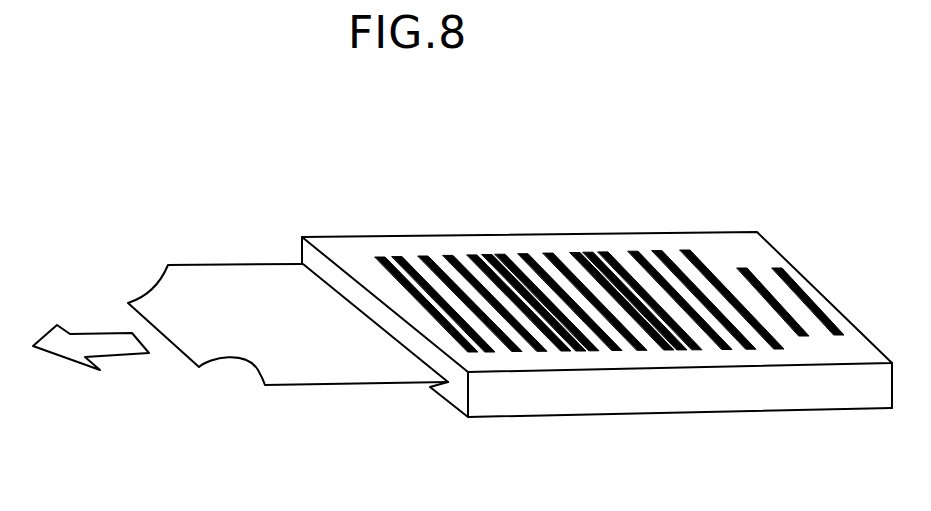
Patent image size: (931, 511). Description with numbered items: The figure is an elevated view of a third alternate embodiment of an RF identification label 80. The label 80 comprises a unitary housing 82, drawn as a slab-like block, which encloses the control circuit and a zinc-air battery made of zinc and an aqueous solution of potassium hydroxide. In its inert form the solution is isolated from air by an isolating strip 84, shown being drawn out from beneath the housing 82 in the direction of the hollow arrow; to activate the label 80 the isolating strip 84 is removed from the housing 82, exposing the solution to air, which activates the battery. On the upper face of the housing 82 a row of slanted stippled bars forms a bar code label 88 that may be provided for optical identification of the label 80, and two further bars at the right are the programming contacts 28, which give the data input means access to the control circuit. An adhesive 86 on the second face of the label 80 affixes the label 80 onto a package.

The label 80 is at (522, 323).
The unitary housing 82 is at (752, 397).
The isolating strip 84 is at (378, 383).
The adhesive 86 is at (533, 418).
The bar code label 88 is at (620, 250).
The programming contacts 28 is at (766, 270).